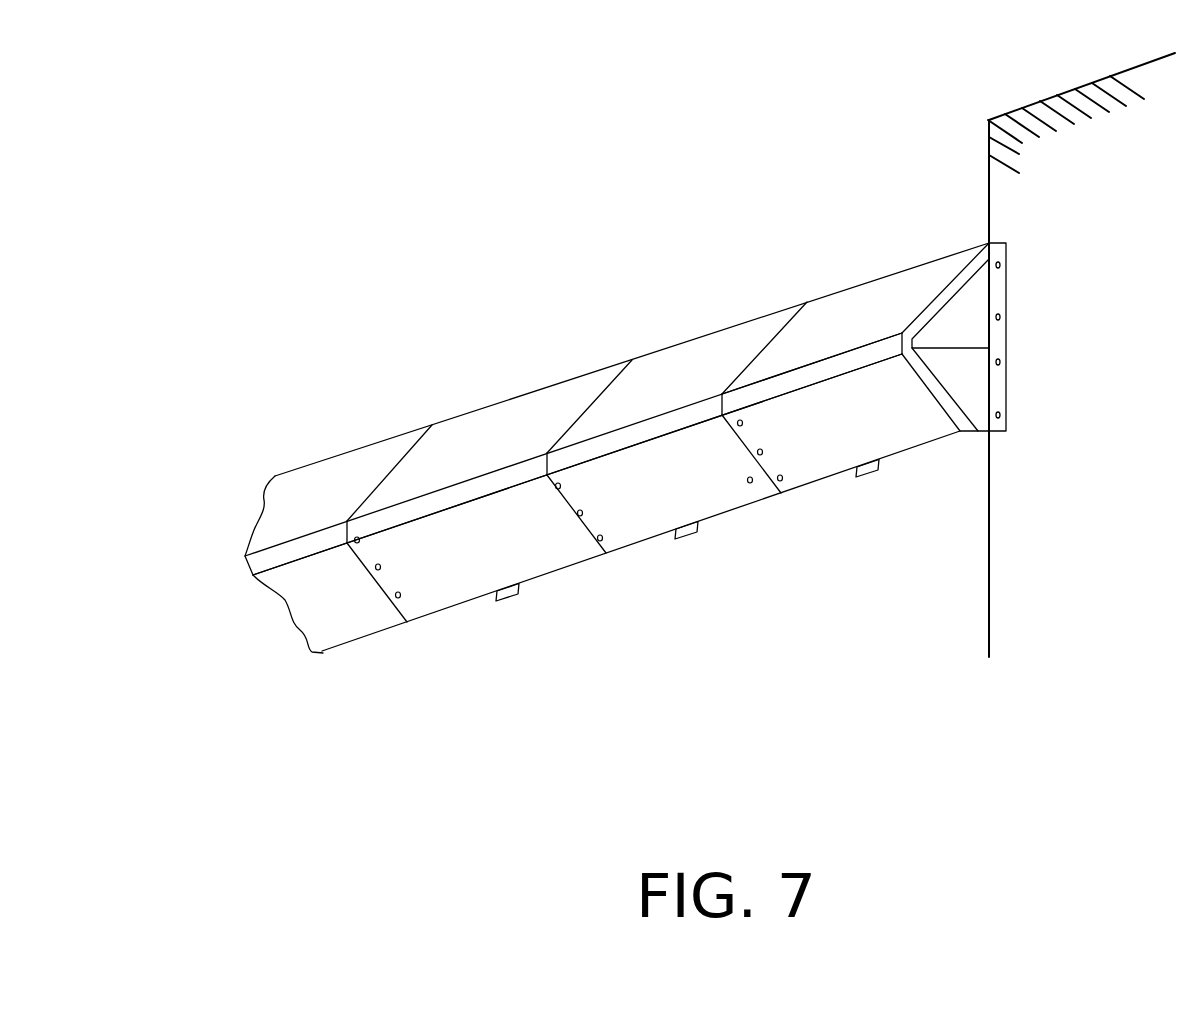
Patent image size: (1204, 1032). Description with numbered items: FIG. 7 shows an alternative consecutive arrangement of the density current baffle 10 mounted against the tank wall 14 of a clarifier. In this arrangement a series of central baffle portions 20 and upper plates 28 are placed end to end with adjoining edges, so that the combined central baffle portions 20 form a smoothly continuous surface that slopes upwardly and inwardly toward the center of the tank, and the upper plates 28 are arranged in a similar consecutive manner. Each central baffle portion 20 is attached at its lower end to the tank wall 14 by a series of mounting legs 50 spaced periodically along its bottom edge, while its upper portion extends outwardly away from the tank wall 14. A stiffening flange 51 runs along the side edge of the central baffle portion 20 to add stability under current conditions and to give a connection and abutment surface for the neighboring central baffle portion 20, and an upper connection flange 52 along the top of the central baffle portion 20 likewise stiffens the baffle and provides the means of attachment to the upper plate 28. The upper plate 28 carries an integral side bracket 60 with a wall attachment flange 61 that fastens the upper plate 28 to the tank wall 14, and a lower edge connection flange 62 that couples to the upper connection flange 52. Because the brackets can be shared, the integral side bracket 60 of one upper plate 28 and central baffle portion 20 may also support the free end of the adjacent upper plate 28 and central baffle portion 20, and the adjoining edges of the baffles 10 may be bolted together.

The density current baffle 10 is at (313, 387).
The tank wall 14 is at (989, 525).
The central baffle portion 20 is at (442, 583).
The upper plate 28 is at (337, 513).
The mounting leg 50 is at (518, 592).
The stiffening flange 51 is at (938, 390).
The upper connection flange 52 is at (465, 503).
The integral side bracket 60 is at (963, 325).
The wall attachment flange 61 is at (998, 292).
The lower edge connection flange 62 is at (805, 377).